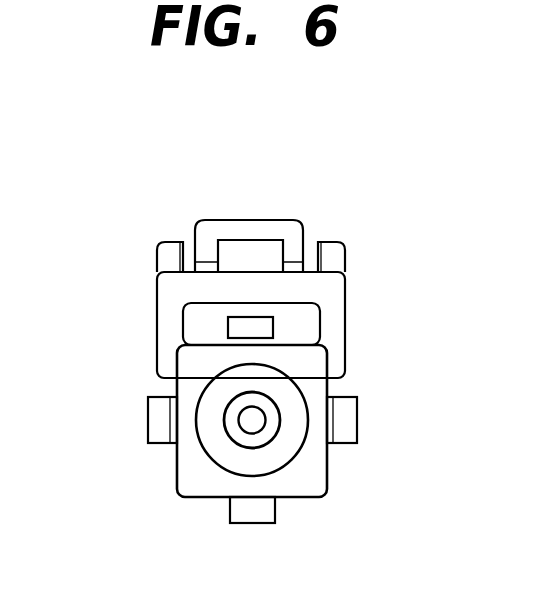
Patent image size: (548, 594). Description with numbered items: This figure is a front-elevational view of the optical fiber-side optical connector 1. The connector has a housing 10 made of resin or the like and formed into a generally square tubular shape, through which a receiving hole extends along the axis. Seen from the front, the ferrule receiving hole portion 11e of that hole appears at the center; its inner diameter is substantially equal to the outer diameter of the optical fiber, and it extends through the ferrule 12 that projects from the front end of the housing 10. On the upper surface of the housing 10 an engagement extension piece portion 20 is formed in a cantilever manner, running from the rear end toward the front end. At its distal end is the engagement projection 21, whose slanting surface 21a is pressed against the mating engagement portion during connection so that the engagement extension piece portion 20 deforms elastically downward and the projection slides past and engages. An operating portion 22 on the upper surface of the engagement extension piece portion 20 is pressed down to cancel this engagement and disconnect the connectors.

The optical fiber-side optical connector 1 is at (374, 124).
The housing 10 is at (333, 304).
The ferrule receiving hole portion 11e is at (262, 410).
The ferrule 12 is at (227, 433).
The engagement extension piece portion 20 is at (292, 268).
The engagement projection 21 is at (242, 241).
The slanting surface 21a is at (232, 255).
The operating portion 22 is at (282, 220).